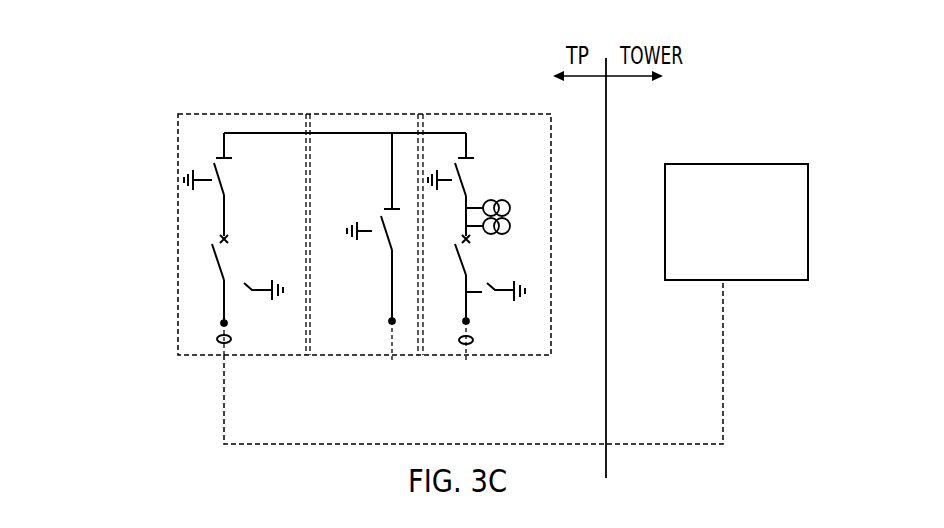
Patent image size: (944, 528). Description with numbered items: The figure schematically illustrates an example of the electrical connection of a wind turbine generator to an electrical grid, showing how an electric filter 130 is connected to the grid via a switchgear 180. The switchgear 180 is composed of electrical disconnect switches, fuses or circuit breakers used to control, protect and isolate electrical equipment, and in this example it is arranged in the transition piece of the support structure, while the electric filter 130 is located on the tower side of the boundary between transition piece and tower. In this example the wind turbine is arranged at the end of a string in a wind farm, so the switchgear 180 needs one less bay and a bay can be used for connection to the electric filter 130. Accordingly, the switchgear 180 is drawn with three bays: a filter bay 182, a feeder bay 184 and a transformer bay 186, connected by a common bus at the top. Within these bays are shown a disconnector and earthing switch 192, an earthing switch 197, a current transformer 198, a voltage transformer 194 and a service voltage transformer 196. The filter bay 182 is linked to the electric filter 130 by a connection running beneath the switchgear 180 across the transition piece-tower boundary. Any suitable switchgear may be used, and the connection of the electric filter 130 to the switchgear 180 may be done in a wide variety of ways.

The electric filter 130 is at (786, 164).
The switchgear 180 is at (122, 130).
The filter bay 182 is at (243, 114).
The feeder bay 184 is at (368, 200).
The transformer bay 186 is at (487, 223).
The disconnector and earthing switch 192 is at (372, 220).
The voltage transformer 194 is at (508, 205).
The service voltage transformer 196 is at (501, 234).
The earthing switch 197 is at (490, 297).
The current transformer 198 is at (470, 342).